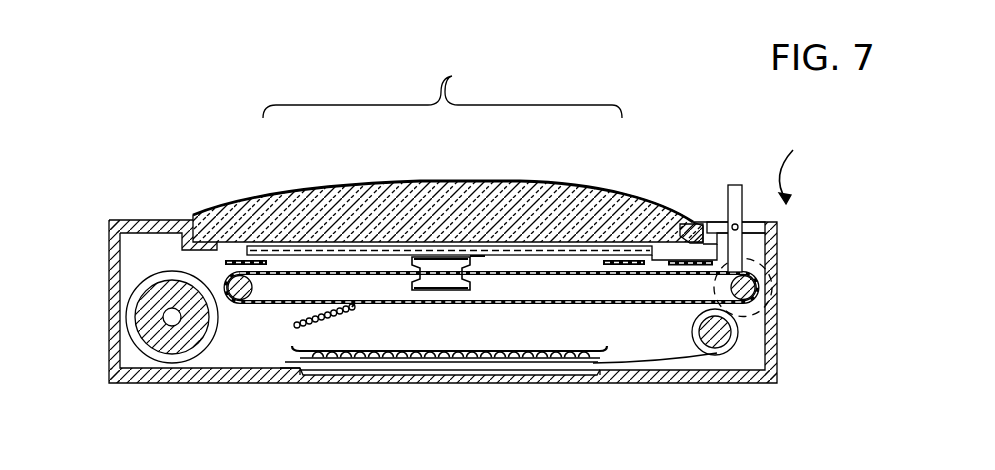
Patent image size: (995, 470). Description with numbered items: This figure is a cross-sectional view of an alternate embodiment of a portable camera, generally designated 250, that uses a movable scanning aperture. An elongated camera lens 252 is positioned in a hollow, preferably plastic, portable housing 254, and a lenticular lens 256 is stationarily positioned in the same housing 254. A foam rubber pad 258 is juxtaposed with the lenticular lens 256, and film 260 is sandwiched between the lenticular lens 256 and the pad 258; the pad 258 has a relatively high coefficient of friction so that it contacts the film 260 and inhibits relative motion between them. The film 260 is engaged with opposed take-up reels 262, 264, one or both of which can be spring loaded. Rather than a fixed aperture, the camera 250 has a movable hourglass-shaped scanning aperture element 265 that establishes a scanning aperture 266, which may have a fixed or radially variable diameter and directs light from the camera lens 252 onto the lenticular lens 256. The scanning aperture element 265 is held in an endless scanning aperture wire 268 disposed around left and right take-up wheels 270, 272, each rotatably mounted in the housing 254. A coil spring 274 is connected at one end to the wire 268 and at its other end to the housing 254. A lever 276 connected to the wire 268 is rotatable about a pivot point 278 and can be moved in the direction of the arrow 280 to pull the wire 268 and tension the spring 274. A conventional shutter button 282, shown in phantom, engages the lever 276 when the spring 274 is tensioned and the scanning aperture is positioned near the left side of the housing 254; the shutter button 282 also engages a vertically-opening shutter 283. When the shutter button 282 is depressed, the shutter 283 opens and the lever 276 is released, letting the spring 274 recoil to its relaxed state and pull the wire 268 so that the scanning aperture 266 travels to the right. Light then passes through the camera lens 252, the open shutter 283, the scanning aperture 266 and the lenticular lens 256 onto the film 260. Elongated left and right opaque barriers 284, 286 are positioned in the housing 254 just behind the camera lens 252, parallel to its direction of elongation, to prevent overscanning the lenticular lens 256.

The camera 250 is at (442, 88).
The elongated camera lens 252 is at (622, 200).
The portable housing 254 is at (778, 316).
The lenticular lens 256 is at (584, 358).
The foam rubber pad 258 is at (452, 386).
The film 260 is at (668, 360).
The take-up reel 262 is at (720, 337).
The take-up reel 264 is at (148, 313).
The scanning aperture element 265 is at (466, 250).
The scanning aperture 266 is at (436, 258).
The scanning aperture wire 268 is at (279, 272).
The left take-up wheel 270 is at (245, 302).
The right take-up wheel 272 is at (757, 292).
The coil spring 274 is at (348, 316).
The lever 276 is at (732, 205).
The pivot point 278 is at (727, 226).
The arrow 280 is at (805, 166).
The shutter button 282 is at (782, 250).
The shutter 283 is at (495, 250).
The left opaque barrier 284 is at (230, 258).
The right opaque barrier 286 is at (617, 260).